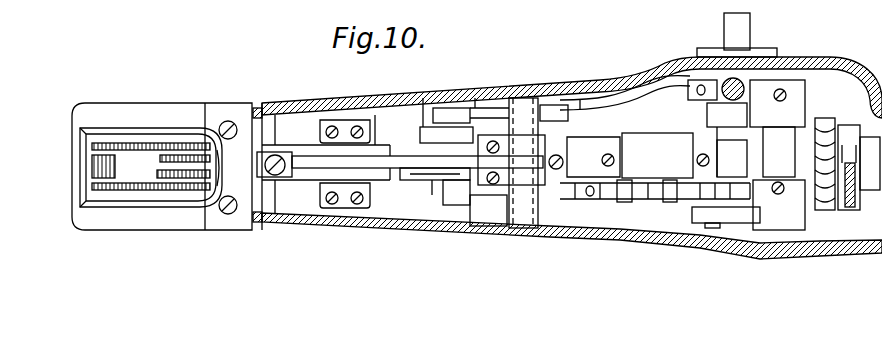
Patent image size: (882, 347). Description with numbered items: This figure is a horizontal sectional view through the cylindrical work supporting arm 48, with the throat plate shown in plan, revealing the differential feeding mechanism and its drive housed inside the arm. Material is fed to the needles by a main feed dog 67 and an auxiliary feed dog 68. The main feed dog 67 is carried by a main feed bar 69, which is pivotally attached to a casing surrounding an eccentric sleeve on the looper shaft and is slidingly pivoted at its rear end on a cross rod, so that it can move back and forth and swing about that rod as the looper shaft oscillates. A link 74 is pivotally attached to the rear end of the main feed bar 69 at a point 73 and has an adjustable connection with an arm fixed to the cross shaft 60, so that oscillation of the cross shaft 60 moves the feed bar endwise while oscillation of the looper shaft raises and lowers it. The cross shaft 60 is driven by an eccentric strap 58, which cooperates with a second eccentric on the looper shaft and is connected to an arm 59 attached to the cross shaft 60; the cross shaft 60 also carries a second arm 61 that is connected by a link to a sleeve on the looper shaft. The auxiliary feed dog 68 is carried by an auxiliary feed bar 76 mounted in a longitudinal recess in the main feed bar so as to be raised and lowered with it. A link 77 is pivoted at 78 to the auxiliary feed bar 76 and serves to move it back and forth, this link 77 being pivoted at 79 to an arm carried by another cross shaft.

The work supporting arm 48 is at (487, 237).
The eccentric strap 58 is at (706, 70).
The arm 59 is at (752, 113).
The cross shaft 60 is at (783, 147).
The second arm 61 is at (745, 210).
The main feed dog 67 is at (131, 145).
The auxiliary feed dog 68 is at (188, 145).
The main feed bar 69 is at (318, 155).
The pivot point 73 is at (596, 194).
The link 74 is at (608, 197).
The auxiliary feed bar 76 is at (378, 163).
The link 77 is at (433, 175).
The pivot 78 is at (404, 183).
The pivot 79 is at (526, 92).